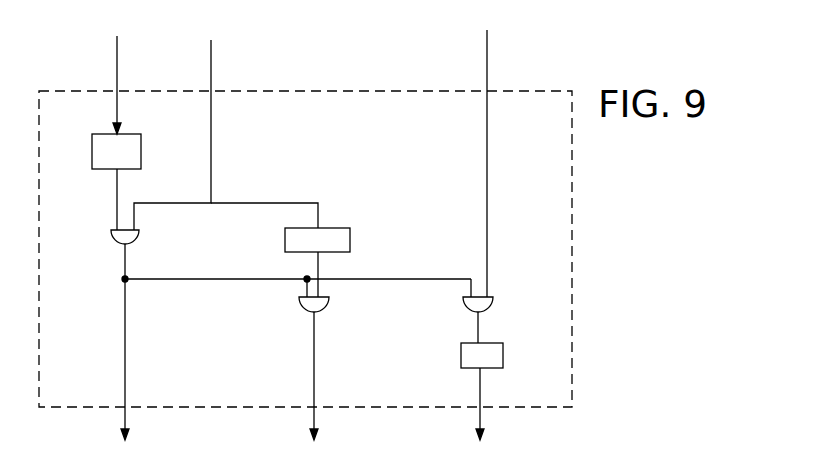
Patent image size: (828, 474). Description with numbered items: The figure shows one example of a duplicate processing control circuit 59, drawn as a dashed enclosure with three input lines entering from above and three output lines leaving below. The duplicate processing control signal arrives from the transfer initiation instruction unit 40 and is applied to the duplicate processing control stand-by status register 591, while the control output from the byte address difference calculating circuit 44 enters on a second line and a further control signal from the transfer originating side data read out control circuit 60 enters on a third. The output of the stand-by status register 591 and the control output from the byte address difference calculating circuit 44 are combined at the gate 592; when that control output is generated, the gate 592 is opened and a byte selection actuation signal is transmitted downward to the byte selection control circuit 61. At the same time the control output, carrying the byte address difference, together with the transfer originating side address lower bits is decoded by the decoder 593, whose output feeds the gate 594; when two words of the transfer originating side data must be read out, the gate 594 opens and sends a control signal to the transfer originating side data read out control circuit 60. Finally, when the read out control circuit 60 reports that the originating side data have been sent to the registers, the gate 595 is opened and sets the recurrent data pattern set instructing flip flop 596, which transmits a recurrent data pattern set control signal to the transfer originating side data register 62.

The duplicate processing control circuit 59 is at (573, 324).
The transfer initiation instruction unit 40 is at (125, 73).
The byte address difference calculating circuit 44 is at (189, 120).
The transfer originating side data read out control circuit 60 is at (416, 236).
The byte selection control circuit 61 is at (129, 455).
The transfer originating side data register 62 is at (486, 455).
The duplicate processing control stand-by status register 591 is at (125, 171).
The gate 592 is at (291, 325).
The decoder 593 is at (285, 250).
The gate 594 is at (329, 358).
The gate 595 is at (496, 310).
The recurrent data pattern set instructing flip flop 596 is at (500, 384).